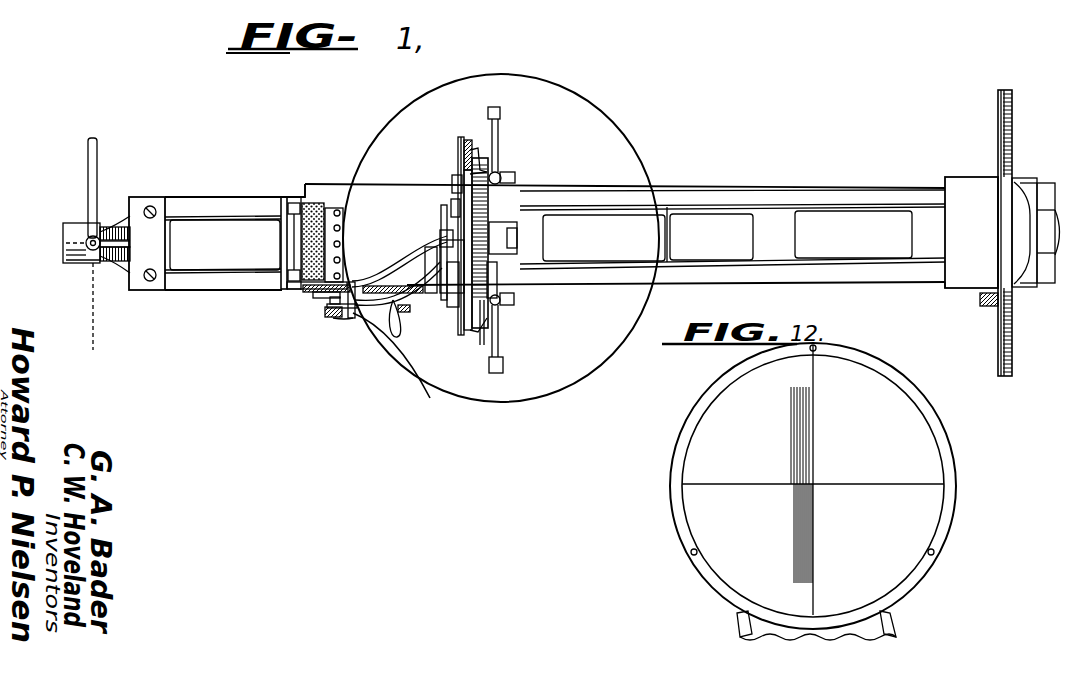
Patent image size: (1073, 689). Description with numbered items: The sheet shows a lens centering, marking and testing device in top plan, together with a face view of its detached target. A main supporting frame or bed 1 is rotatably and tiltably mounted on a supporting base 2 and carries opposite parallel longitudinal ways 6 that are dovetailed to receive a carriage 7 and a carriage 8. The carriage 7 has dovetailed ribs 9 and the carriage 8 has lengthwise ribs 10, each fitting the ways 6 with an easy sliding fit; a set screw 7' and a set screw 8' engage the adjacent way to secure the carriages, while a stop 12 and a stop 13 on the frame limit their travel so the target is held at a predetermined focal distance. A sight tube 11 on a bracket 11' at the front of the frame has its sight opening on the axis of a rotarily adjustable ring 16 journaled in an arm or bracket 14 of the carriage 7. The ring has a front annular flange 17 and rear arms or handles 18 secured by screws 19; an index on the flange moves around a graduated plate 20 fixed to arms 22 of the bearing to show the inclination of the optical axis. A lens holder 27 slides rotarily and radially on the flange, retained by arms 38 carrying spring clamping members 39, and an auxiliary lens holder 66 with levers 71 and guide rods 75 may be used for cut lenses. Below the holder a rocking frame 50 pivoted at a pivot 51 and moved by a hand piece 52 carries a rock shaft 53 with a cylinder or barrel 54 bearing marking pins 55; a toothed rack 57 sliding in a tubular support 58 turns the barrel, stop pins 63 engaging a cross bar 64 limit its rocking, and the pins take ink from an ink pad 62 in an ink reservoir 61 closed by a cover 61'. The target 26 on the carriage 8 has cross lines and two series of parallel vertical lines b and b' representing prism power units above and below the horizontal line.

In FIG. 1, the main supporting frame or bed 1 is at (771, 218).
In FIG. 1, the supporting base 2 is at (583, 142).
In FIG. 1, the longitudinal ways 6 is at (821, 190).
In FIG. 1, the carriage 7 is at (625, 221).
In FIG. 1, the set screw 7' is at (406, 319).
In FIG. 1, the carriage 8 is at (971, 217).
In FIG. 12, the carriage 8 is at (795, 626).
In FIG. 1, the set screw 8' is at (980, 315).
In FIG. 1, the dovetailed ribs 9 is at (305, 188).
In FIG. 1, the lengthwise ribs 10 is at (946, 285).
In FIG. 1, the sight tube 11 is at (96, 244).
In FIG. 1, the bracket 11' is at (117, 257).
In FIG. 1, the stop 12 is at (545, 240).
In FIG. 1, the stop 13 is at (165, 233).
In FIG. 1, the arm or bracket 14 is at (486, 213).
In FIG. 1, the rotarily adjustable ring 16 is at (498, 274).
In FIG. 1, the annular flange 17 is at (462, 312).
In FIG. 1, the arms or handles 18 is at (499, 112).
In FIG. 1, the screws 19 is at (505, 176).
In FIG. 1, the graduated plate 20 is at (479, 330).
In FIG. 1, the arms 22 is at (478, 145).
In FIG. 1, the target 26 is at (998, 127).
In FIG. 12, the target 26 is at (694, 458).
In FIG. 1, the lens holder 27 is at (453, 180).
In FIG. 1, the arms 38 is at (458, 147).
In FIG. 1, the spring clamping members 39 is at (462, 140).
In FIG. 1, the rocking frame 50 is at (397, 270).
In FIG. 1, the pivot 51 is at (451, 230).
In FIG. 1, the hand piece 52 is at (392, 328).
In FIG. 1, the rock shaft or spindle 53 is at (336, 305).
In FIG. 1, the cylinder or barrel 54 is at (341, 214).
In FIG. 1, the marking pins 55 is at (341, 229).
In FIG. 1, the toothed rack 57 is at (307, 292).
In FIG. 1, the tubular support 58 is at (392, 280).
In FIG. 1, the ink reservoir 61 is at (266, 260).
In FIG. 1, the cover 61' is at (265, 226).
In FIG. 1, the ink pad or roller 62 is at (302, 240).
In FIG. 1, the stop pins 63 is at (317, 295).
In FIG. 1, the cross bar 64 is at (353, 320).
In FIG. 1, the auxiliary lens holder 66 is at (509, 232).
In FIG. 1, the levers 71 is at (508, 250).
In FIG. 1, the guide rods 75 is at (452, 198).
In FIG. 12, the series of parallel vertical lines b is at (780, 435).
In FIG. 12, the series of parallel vertical lines b' is at (782, 533).